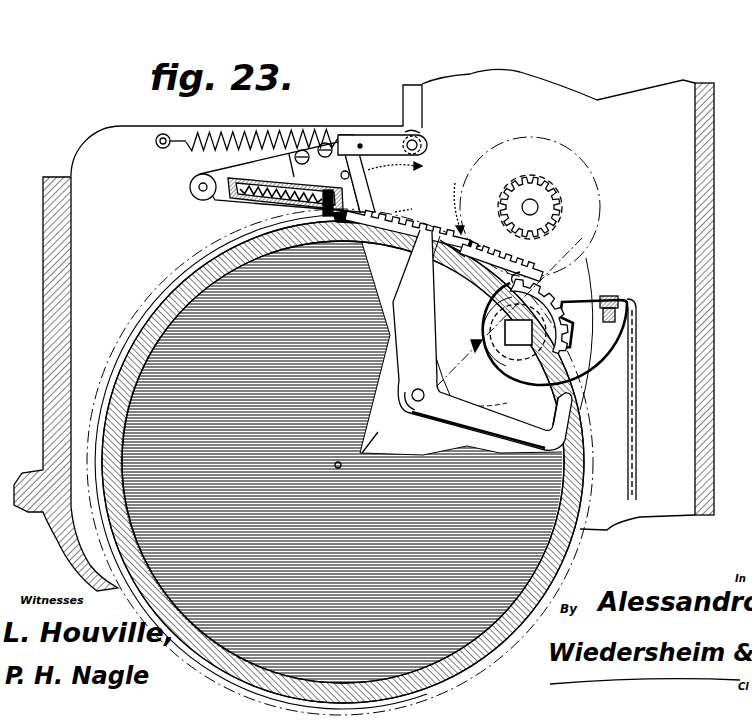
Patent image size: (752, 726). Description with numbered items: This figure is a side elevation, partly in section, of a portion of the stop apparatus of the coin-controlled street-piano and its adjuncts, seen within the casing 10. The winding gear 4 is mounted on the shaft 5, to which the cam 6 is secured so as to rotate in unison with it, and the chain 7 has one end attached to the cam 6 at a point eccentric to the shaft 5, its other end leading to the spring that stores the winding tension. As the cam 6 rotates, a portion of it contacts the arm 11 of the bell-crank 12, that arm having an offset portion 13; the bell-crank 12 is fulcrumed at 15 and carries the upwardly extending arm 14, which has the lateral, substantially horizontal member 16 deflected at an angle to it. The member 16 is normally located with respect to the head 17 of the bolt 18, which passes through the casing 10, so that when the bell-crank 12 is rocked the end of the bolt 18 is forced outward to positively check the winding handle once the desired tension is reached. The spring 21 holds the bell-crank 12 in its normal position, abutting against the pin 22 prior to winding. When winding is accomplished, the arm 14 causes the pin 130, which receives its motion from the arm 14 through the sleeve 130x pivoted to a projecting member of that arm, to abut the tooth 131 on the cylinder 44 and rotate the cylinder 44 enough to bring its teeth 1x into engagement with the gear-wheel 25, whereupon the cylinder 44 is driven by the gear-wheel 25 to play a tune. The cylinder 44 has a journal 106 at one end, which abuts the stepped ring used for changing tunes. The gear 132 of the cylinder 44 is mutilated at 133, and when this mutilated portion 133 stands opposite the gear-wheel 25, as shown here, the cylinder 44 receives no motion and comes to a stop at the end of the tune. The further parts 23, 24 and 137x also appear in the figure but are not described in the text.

The casing 10 is at (364, 327).
The cylinder 44 is at (193, 278).
The spring 21 is at (247, 147).
The lever 137x is at (275, 176).
The pin 130 is at (322, 214).
The sleeve 130x is at (261, 206).
The pin 22 is at (341, 176).
The lateral member 16 is at (382, 152).
The head 17 is at (414, 134).
The bolt 18 is at (422, 145).
The tooth 131 is at (364, 214).
The gear 4 is at (608, 295).
The gear-wheel 25 is at (530, 220).
The pinion 23 is at (553, 222).
The shaft 24 is at (530, 202).
The mutilated portion 133 is at (489, 261).
The cam 6 is at (528, 323).
The gear 132 is at (568, 297).
The shaft 5 is at (514, 331).
The arm 14 is at (397, 330).
The teeth 1x is at (444, 253).
The arm 11 is at (478, 426).
The offset portion 13 is at (562, 411).
The bell-crank 12 is at (411, 395).
The journal 106 is at (388, 421).
The fulcrum 15 is at (417, 402).
The chain 7 is at (635, 399).